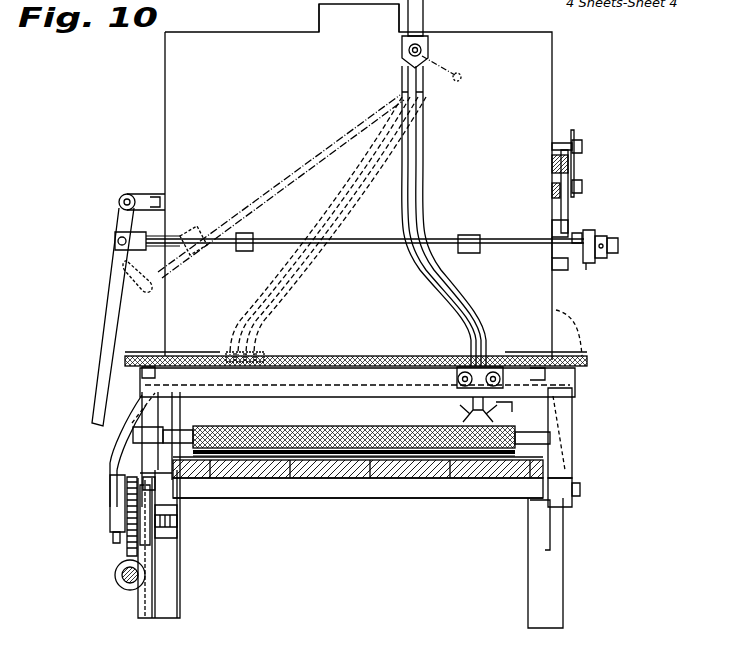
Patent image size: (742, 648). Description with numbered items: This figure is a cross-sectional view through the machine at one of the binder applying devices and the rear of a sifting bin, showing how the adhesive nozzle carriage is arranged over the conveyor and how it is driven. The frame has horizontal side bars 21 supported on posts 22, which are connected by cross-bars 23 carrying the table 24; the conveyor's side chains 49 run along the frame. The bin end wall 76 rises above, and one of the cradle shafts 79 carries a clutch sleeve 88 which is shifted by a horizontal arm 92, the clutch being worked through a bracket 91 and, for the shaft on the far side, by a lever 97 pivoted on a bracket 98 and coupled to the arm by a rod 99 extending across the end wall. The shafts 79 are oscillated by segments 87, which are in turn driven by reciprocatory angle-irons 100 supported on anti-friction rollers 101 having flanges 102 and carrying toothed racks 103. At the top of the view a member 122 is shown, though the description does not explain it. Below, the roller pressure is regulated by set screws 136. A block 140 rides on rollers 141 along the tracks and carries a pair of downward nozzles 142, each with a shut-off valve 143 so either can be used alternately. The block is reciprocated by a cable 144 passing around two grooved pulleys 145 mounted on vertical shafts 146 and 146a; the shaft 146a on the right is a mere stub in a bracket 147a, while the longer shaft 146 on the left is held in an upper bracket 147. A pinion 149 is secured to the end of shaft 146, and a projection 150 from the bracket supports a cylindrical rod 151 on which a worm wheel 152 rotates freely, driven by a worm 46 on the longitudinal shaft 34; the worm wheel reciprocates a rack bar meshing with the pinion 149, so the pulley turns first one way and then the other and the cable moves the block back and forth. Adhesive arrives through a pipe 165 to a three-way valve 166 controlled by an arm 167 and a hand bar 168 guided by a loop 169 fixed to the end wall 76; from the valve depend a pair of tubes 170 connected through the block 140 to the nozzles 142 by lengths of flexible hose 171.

The side bars 21 is at (113, 480).
The posts 22 is at (176, 605).
The cross-bars 23 is at (360, 493).
The table 24 is at (472, 486).
The shaft 34 is at (124, 580).
The worms 46 is at (426, 480).
The side chains 49 is at (200, 422).
The end walls 76 is at (358, 182).
The shafts 79 is at (620, 245).
The segments 87 is at (570, 208).
The clutch sleeve 88 is at (590, 232).
The bracket 91 is at (548, 267).
The horizontal arm 92 is at (586, 264).
The lever 97 is at (112, 277).
The bracket 98 is at (150, 196).
The rod 99 is at (492, 244).
The angle-iron 100 is at (570, 165).
The anti-friction rollers 101 is at (584, 147).
The flange 102 is at (576, 134).
The toothed rack 103 is at (584, 183).
The bracket 122 is at (318, 16).
The set screws 136 is at (578, 391).
The block 140 is at (465, 402).
The rollers 141 is at (455, 376).
The nozzles 142 is at (462, 418).
The shut-off valve 143 is at (498, 408).
The cable 144 is at (345, 358).
The grooved pulleys 145 is at (196, 343).
The shaft 146 is at (239, 408).
The shaft 146a is at (592, 332).
The upper bracket 147 is at (148, 412).
The bracket 147a is at (570, 410).
The pinion 149 is at (180, 522).
The projection 150 is at (310, 414).
The cylindrical rod 151 is at (108, 514).
The worm wheel 152 is at (127, 548).
The pipes 165 is at (424, 12).
The three-way valve 166 is at (422, 46).
The arm 167 is at (450, 62).
The hand bar 168 is at (333, 150).
The loop 169 is at (195, 232).
The tubes 170 is at (400, 77).
The flexible hose 171 is at (405, 258).